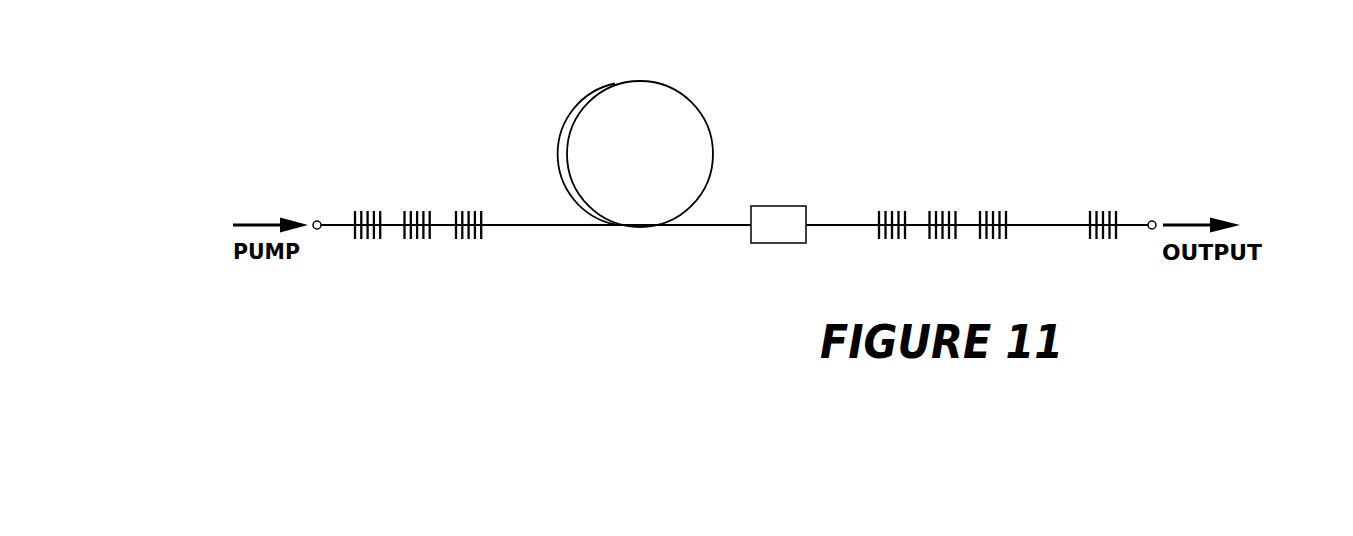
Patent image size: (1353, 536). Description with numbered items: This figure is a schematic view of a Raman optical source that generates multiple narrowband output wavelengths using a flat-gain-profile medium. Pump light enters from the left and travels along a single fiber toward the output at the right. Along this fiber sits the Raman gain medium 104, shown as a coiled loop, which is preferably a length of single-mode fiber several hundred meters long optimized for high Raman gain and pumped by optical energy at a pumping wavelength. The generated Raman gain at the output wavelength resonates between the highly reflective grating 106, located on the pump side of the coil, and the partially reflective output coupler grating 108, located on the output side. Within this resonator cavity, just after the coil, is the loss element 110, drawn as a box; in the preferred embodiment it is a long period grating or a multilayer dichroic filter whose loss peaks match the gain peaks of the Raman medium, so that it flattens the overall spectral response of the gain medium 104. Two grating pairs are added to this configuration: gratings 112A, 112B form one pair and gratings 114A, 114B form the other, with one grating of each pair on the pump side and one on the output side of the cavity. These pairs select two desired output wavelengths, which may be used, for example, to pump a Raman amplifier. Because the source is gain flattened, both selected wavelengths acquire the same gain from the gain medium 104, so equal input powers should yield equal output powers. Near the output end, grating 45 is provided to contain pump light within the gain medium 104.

The Raman gain medium 104 is at (649, 77).
The highly reflective grating 106 is at (477, 204).
The partially reflective output coupler grating 108 is at (897, 212).
The loss element 110 is at (792, 202).
The grating 112A is at (422, 242).
The grating 112B is at (943, 242).
The grating 114A is at (367, 205).
The grating 114B is at (997, 212).
The grating 45 is at (1107, 212).